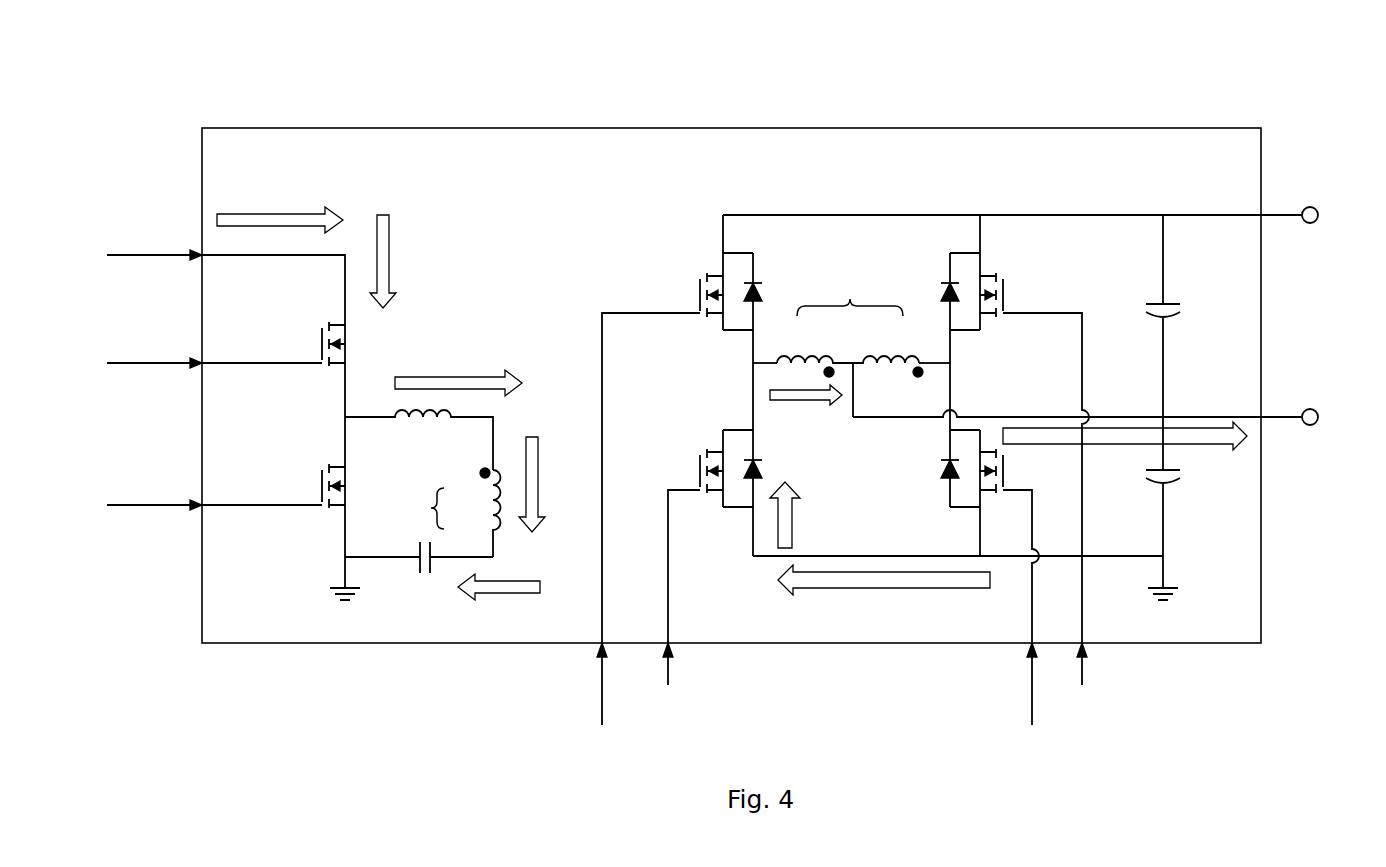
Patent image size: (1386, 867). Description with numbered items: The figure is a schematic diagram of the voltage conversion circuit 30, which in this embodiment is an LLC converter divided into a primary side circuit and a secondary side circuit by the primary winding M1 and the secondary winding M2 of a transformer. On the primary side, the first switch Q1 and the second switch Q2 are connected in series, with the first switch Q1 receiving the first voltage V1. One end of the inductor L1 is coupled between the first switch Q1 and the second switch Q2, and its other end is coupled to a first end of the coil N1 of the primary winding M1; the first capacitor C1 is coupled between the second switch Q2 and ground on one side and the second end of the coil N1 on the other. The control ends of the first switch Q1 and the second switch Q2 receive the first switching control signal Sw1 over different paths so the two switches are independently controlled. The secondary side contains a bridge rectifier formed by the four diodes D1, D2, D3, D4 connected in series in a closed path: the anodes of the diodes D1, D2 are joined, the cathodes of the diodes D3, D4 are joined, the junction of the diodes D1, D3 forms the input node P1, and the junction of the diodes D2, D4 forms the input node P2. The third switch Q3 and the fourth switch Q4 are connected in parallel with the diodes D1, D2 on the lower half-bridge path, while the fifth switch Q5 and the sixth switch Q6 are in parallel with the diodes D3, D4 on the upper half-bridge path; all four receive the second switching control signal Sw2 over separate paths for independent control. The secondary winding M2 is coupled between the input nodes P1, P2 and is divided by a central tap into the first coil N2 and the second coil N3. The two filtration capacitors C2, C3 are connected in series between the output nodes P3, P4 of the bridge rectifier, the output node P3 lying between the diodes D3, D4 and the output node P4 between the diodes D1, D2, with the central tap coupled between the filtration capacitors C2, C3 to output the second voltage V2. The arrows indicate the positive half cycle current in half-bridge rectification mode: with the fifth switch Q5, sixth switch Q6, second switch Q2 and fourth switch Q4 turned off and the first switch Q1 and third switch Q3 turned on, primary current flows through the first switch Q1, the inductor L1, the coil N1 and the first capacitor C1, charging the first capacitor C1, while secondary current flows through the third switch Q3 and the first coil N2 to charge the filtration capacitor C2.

The voltage conversion circuit 30 is at (357, 128).
The first switch Q1 is at (299, 361).
The second switch Q2 is at (320, 528).
The third switch Q3 is at (702, 536).
The fourth switch Q4 is at (999, 536).
The fifth switch Q5 is at (677, 448).
The sixth switch Q6 is at (1019, 448).
The diode D1 is at (774, 459).
The diode D2 is at (926, 473).
The diode D3 is at (772, 308).
The diode D4 is at (932, 279).
The inductor L1 is at (419, 440).
The first capacitor C1 is at (419, 574).
The filtration capacitor C2 is at (1187, 532).
The filtration capacitor C3 is at (1187, 342).
The primary winding M1 is at (444, 512).
The coil N1 is at (477, 512).
The secondary winding M2 is at (850, 343).
The first coil N2 is at (815, 372).
The second coil N3 is at (888, 352).
The input node P1 is at (744, 366).
The input node P2 is at (955, 366).
The output node P3 is at (1015, 217).
The output node P4 is at (949, 576).
The first voltage V1 is at (154, 241).
The second voltage V2 is at (1108, 418).
The first switching control signal Sw1 is at (214, 419).
The second switching control signal Sw2 is at (872, 685).